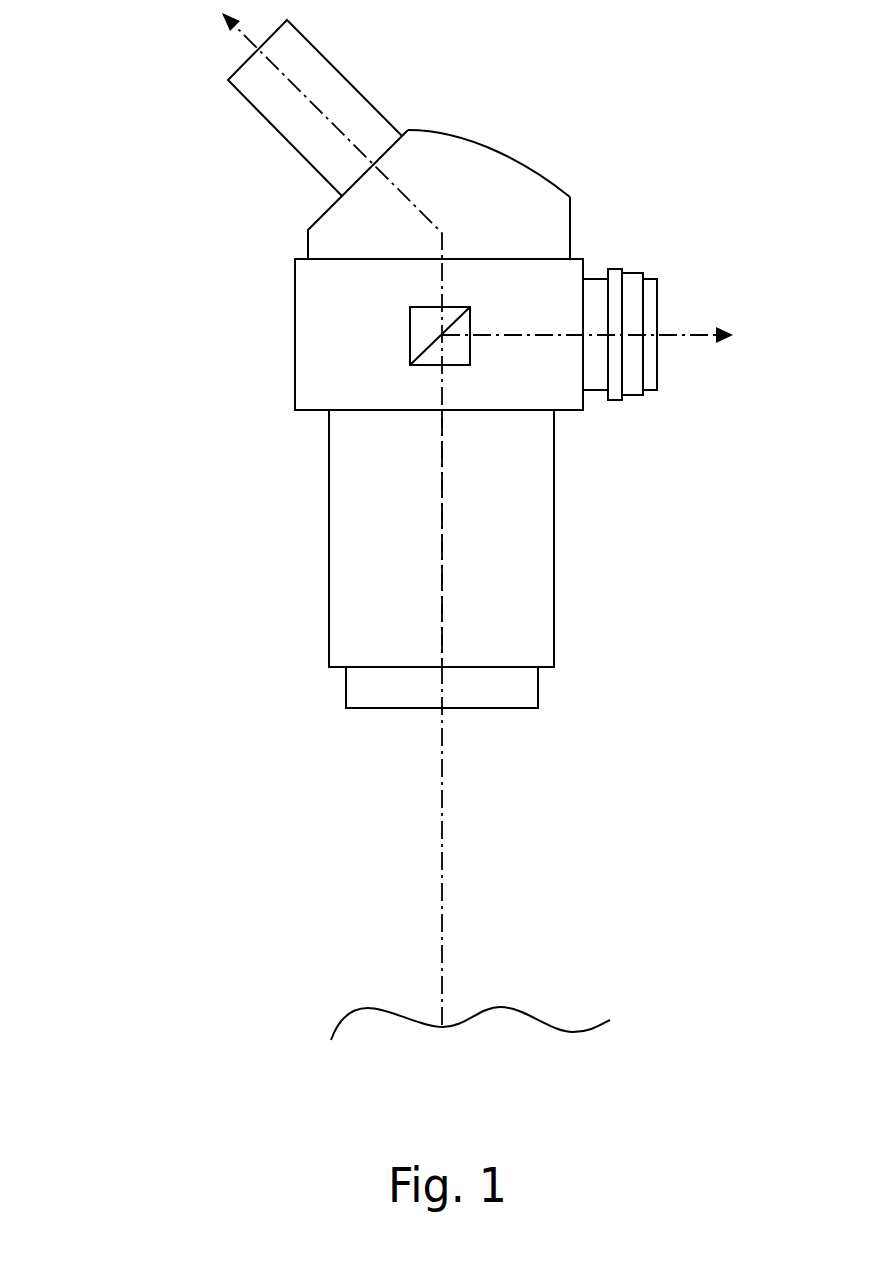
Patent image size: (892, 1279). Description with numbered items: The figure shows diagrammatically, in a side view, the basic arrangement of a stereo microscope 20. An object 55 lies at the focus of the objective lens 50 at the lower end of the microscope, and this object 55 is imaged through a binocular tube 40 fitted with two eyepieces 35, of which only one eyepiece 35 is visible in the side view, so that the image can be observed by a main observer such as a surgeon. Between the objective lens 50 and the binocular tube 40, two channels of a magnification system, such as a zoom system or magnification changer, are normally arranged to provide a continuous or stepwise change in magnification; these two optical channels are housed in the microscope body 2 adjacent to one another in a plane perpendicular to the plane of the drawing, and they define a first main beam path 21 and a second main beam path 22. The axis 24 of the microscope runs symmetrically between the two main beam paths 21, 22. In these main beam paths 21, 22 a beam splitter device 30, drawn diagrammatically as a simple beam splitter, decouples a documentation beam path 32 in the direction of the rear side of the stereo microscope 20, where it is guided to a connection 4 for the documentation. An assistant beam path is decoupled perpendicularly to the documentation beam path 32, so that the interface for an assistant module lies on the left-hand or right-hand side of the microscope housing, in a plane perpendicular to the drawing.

The stereo microscope 20 is at (166, 256).
The microscope body 2 is at (537, 628).
The connection for the documentation 4 is at (657, 287).
The first main beam path 21 is at (442, 519).
The second main beam path 22 is at (442, 437).
The axis of the microscope 24 is at (442, 468).
The beam splitter device 30 is at (470, 318).
The documentation beam path 32 is at (700, 333).
The eyepieces 35 is at (252, 80).
The binocular tube 40 is at (492, 168).
The objective lens 50 is at (522, 693).
The object 55 is at (507, 1005).